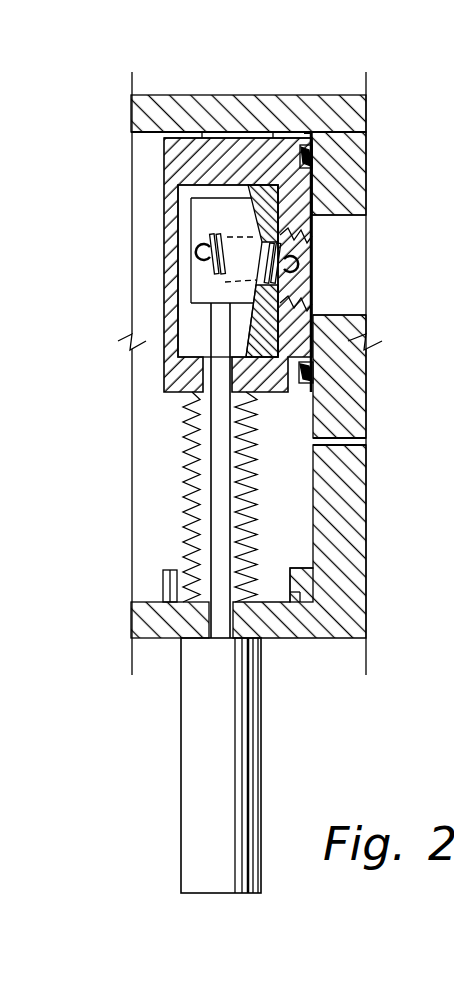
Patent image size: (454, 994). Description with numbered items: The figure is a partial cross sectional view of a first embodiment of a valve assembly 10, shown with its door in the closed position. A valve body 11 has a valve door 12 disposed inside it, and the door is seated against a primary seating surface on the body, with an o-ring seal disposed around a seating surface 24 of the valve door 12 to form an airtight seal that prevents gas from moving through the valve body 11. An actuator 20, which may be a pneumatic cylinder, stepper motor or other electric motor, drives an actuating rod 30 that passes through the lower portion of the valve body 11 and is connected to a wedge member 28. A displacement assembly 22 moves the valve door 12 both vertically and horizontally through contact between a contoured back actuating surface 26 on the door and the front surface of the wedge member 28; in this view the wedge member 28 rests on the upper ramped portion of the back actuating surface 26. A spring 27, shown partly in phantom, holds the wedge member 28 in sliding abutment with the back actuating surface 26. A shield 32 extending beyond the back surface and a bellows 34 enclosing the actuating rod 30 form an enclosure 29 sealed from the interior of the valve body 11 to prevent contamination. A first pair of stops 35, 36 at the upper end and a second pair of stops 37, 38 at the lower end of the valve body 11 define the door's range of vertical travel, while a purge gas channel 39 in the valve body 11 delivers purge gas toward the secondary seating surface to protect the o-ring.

The valve assembly 10 is at (160, 73).
The valve body 11 is at (320, 95).
The valve door 12 is at (293, 393).
The actuator 20 is at (181, 760).
The displacement assembly 22 is at (195, 388).
The seating surface 24 is at (312, 248).
The back actuating surface 26 is at (250, 212).
The spring 27 is at (247, 279).
The wedge member 28 is at (178, 190).
The enclosure 29 is at (185, 281).
The actuating rod 30 is at (218, 551).
The shield 32 is at (164, 163).
The bellows 34 is at (195, 515).
The first stop 35 is at (183, 133).
The first stop 36 is at (290, 133).
The second stop 37 is at (163, 580).
The second stop 38 is at (300, 594).
The purge gas channel 39 is at (357, 442).